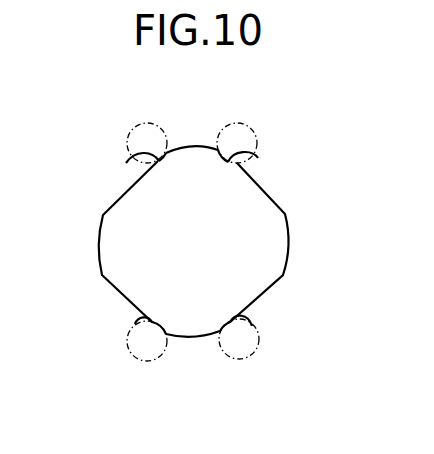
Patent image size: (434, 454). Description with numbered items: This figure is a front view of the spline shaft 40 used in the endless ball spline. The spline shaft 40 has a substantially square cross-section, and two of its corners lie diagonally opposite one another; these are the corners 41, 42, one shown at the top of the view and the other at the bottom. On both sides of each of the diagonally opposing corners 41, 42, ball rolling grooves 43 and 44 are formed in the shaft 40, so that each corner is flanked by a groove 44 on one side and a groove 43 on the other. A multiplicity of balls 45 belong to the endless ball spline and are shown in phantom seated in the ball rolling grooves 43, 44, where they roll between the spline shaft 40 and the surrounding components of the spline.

The spline shaft 40 is at (293, 236).
The corner of the shaft 41 is at (193, 147).
The corner of the shaft 42 is at (192, 335).
The ball rolling groove 43 is at (258, 158).
The ball rolling groove 44 is at (126, 163).
The balls 45 is at (138, 135).